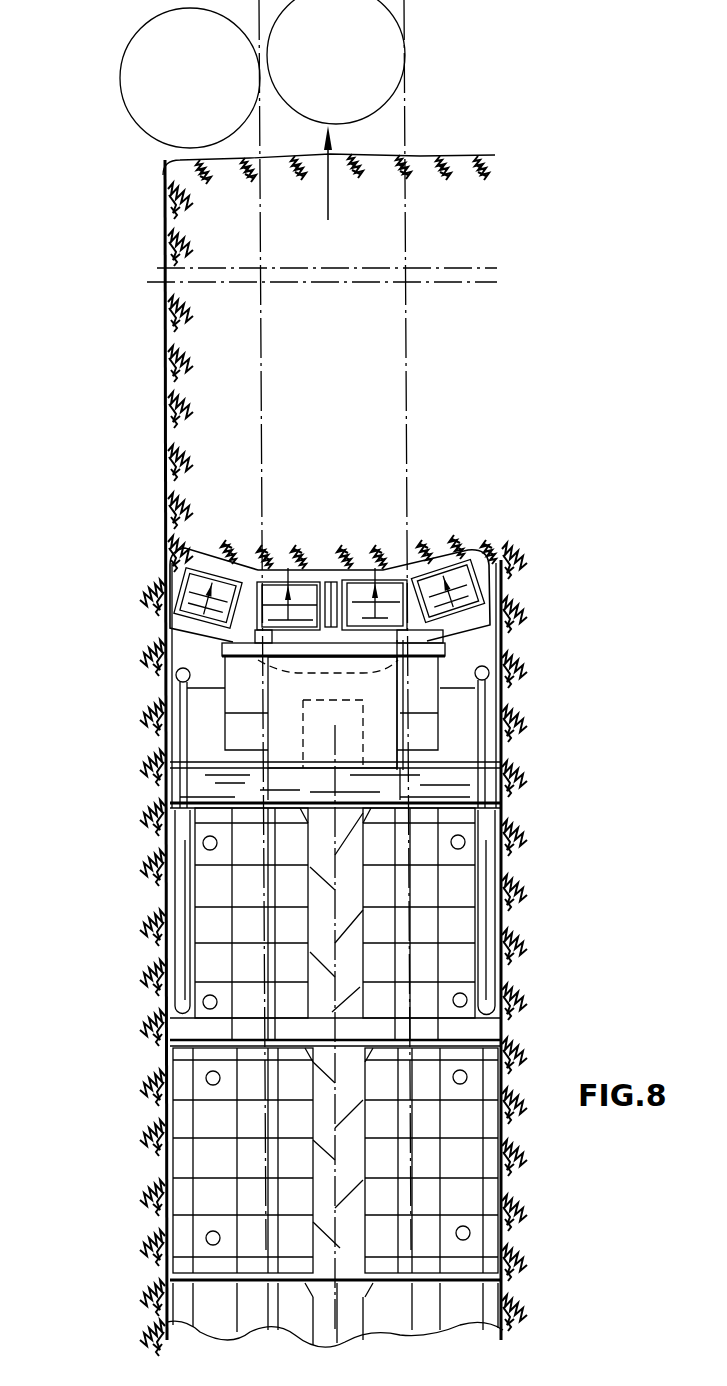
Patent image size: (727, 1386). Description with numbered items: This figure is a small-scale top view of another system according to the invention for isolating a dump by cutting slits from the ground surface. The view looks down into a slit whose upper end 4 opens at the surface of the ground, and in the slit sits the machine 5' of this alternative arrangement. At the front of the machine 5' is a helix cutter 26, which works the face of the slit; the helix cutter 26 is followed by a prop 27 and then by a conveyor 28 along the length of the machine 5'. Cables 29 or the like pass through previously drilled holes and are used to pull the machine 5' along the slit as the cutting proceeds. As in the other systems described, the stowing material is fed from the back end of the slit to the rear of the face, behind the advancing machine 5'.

The upper end 4 is at (330, 195).
The cables 29 is at (404, 432).
The helix cutter 26 is at (285, 560).
The machine 5' is at (289, 685).
The prop 27 is at (150, 816).
The conveyor 28 is at (323, 923).